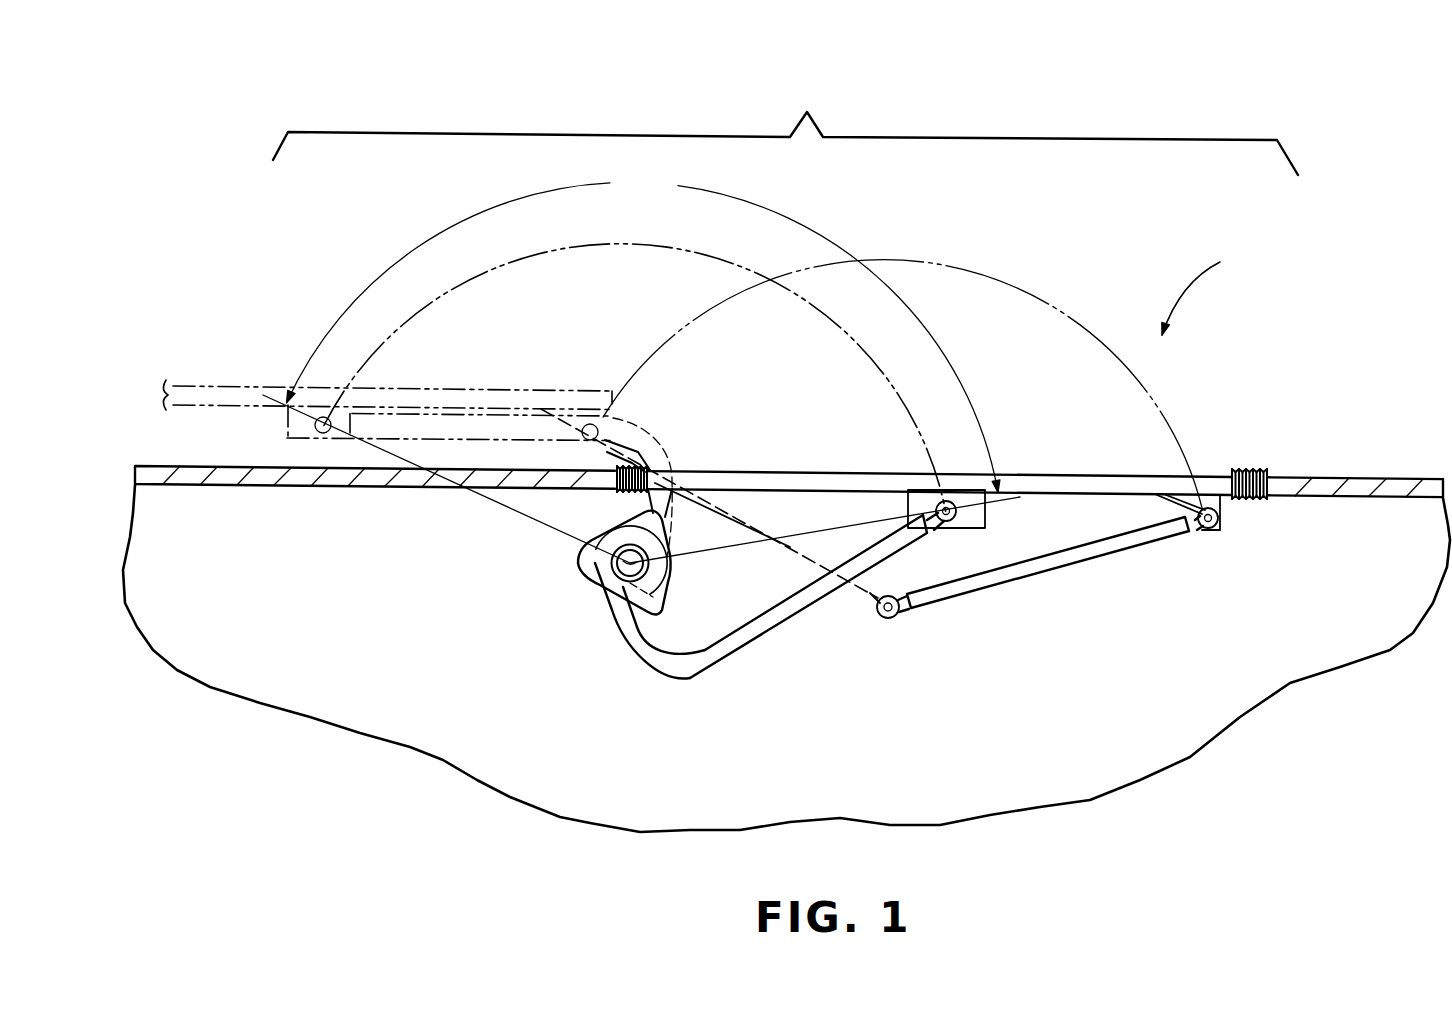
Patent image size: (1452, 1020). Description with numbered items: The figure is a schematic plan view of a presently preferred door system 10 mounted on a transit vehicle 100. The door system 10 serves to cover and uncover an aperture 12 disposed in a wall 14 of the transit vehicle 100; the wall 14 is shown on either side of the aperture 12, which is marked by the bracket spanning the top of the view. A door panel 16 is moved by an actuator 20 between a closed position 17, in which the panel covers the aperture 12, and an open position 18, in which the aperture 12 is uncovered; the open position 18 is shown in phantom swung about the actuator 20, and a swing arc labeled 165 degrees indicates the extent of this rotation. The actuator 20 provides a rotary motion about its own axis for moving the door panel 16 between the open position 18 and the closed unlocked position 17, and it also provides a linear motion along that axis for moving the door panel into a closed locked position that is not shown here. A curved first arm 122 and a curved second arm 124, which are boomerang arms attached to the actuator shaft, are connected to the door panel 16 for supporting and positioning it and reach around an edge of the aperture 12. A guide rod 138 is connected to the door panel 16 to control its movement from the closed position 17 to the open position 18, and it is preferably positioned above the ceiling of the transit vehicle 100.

The door system 10 is at (1208, 283).
The aperture 12 is at (785, 126).
The wall 14 is at (235, 480).
The door panel 16 is at (1068, 480).
The closed position 17 is at (787, 476).
The open position 18 is at (450, 397).
The actuator 20 is at (583, 573).
The transit vehicle 100 is at (978, 788).
The first arm 122 is at (725, 662).
The second arm 124 is at (770, 633).
The guide rod 138 is at (1047, 563).
The opening angle 165 degrees 165 is at (641, 365).